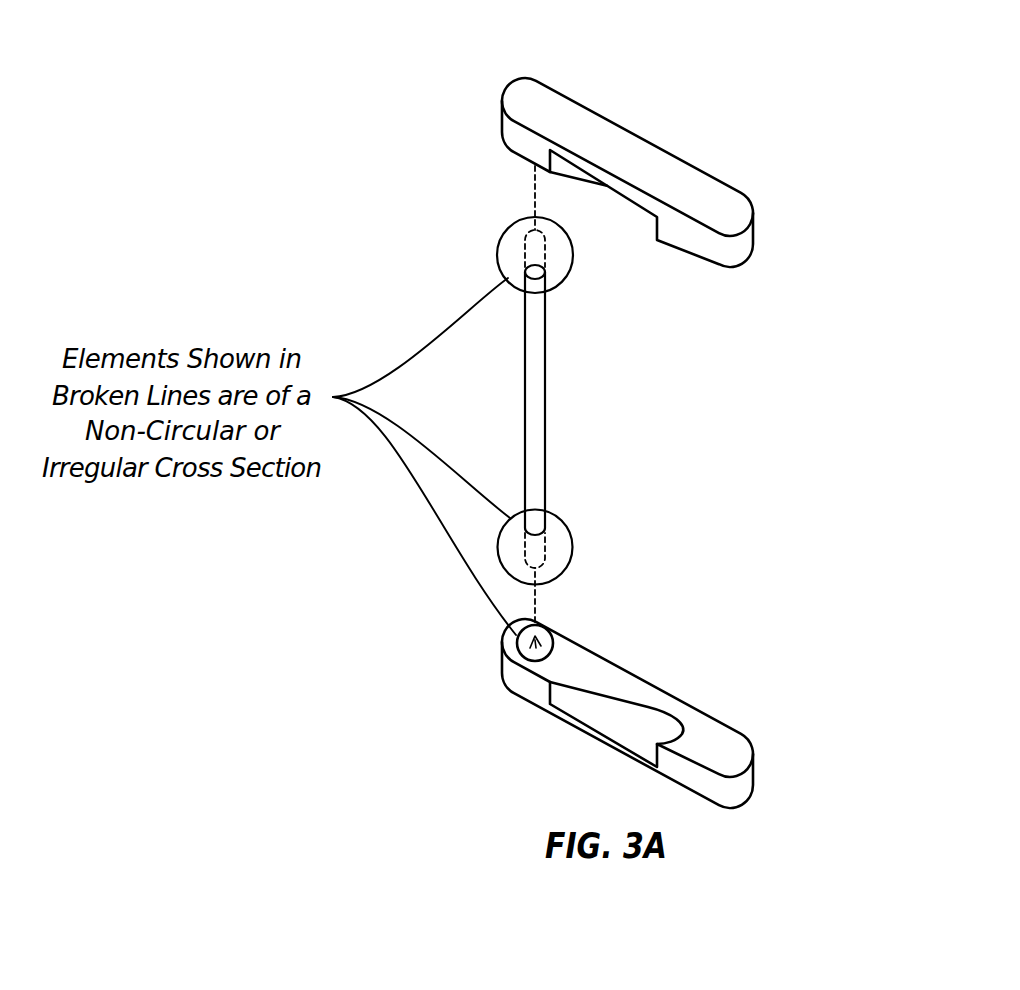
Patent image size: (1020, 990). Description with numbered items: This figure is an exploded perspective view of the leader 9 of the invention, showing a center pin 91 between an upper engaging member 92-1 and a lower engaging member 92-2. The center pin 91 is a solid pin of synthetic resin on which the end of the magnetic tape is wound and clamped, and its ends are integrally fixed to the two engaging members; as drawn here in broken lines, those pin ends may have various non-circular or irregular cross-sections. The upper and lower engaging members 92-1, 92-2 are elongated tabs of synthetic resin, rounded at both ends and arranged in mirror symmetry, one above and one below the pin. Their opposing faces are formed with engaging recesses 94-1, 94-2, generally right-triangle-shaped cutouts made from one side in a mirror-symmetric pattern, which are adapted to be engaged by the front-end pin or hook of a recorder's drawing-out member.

The leader 9 is at (456, 46).
The upper engaging member 92-1 is at (707, 194).
The engaging recess 94-1 is at (628, 202).
The center pin 91 is at (546, 400).
The lower engaging member 92-2 is at (707, 737).
The engaging recess 94-2 is at (627, 738).